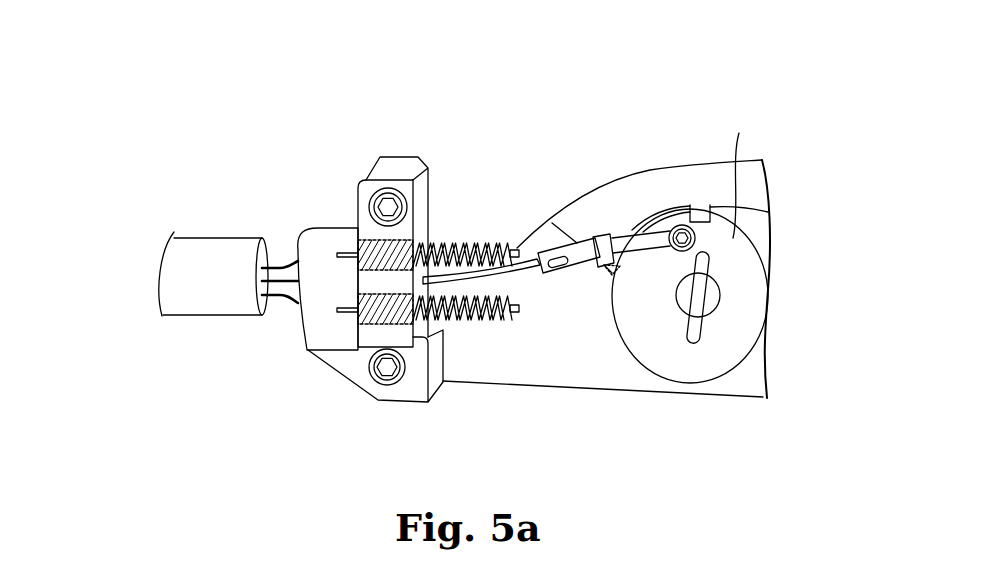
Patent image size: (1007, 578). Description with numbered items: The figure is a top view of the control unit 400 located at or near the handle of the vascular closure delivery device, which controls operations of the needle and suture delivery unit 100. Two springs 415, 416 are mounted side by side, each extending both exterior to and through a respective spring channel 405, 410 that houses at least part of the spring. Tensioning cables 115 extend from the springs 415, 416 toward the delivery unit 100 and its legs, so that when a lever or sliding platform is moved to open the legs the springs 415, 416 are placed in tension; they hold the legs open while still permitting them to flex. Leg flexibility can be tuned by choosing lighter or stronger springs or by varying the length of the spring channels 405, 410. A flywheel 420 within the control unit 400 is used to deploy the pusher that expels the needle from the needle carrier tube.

The needle and suture delivery unit 100 is at (128, 270).
The tensioning cables 115 is at (350, 252).
The control unit 400 is at (492, 90).
The spring channel 405 is at (403, 238).
The spring channel 410 is at (378, 330).
The spring 415 is at (517, 253).
The spring 416 is at (510, 323).
The flywheel 420 is at (606, 237).